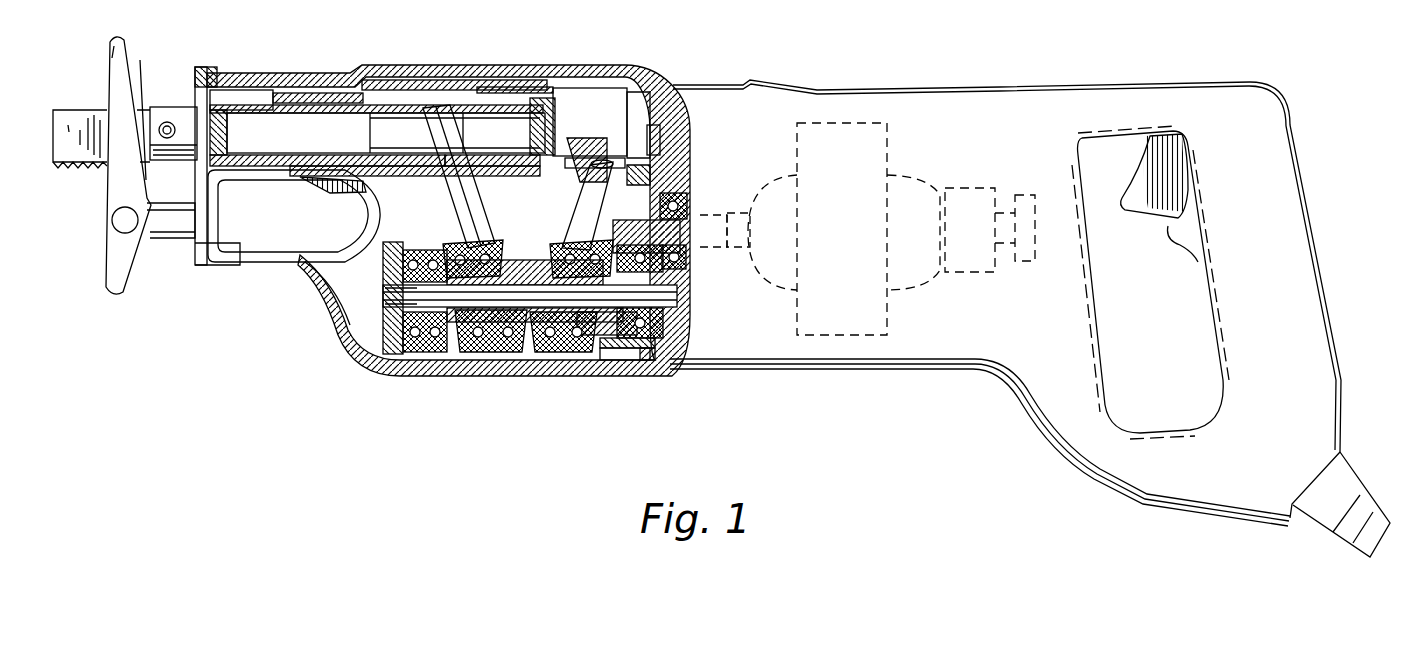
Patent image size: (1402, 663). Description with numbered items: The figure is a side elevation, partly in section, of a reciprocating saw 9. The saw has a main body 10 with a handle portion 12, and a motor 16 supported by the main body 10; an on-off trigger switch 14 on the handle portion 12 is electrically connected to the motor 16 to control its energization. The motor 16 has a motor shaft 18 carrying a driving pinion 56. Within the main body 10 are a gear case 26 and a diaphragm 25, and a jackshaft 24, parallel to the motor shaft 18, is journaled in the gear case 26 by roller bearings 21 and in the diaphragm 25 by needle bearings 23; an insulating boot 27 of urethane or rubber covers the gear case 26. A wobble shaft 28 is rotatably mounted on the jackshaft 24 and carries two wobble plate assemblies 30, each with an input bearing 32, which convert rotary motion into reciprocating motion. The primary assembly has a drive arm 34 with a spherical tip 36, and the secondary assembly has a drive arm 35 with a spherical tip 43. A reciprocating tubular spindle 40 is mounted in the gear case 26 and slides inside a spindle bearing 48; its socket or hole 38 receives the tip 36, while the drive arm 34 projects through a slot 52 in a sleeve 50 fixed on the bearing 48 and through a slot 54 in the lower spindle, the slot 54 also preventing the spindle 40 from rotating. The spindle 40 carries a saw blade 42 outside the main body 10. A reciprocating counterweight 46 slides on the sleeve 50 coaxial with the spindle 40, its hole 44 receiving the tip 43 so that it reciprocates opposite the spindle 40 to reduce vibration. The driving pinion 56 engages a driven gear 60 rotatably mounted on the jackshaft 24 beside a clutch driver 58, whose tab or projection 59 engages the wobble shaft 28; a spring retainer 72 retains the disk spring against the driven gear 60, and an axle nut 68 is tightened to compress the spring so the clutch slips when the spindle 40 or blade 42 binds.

The reciprocating saw 9 is at (868, 397).
The main body 10 is at (998, 88).
The handle portion 12 is at (1220, 322).
The on-off trigger switch 14 is at (1148, 165).
The motor 16 is at (862, 152).
The motor shaft 18 is at (713, 220).
The roller bearings 21 is at (395, 343).
The needle bearings 23 is at (683, 292).
The jackshaft 24 is at (368, 296).
The diaphragm 25 is at (695, 338).
The gear case 26 is at (600, 70).
The insulating boot 27 is at (655, 72).
The wobble shaft 28 is at (512, 262).
The wobble plate assemblies 30 is at (570, 217).
The input bearing 32 is at (503, 360).
The drive arm 34 is at (425, 133).
The drive arm 35 is at (655, 200).
The spherical tip 36 is at (433, 115).
The socket or hole 38 is at (437, 106).
The reciprocating tubular spindle 40 is at (250, 108).
The saw blade 42 is at (87, 110).
The spherical tip 43 is at (585, 170).
The hole 44 is at (630, 190).
The reciprocating counterweight 46 is at (592, 80).
The spindle bearing 48 is at (318, 95).
The sleeve 50 is at (378, 82).
The opposed slots 52 is at (525, 87).
The slot 54 is at (393, 203).
The driving pinion 56 is at (697, 166).
The clutch driver 58 is at (630, 365).
The tab or projection 59 is at (565, 362).
The driven gear 60 is at (648, 376).
The axle nut 68 is at (345, 281).
The spring retainer 72 is at (645, 335).